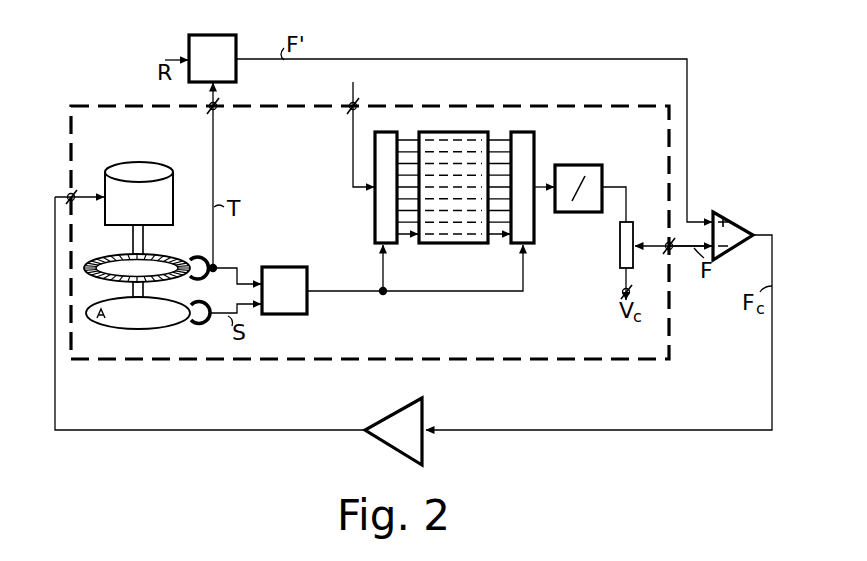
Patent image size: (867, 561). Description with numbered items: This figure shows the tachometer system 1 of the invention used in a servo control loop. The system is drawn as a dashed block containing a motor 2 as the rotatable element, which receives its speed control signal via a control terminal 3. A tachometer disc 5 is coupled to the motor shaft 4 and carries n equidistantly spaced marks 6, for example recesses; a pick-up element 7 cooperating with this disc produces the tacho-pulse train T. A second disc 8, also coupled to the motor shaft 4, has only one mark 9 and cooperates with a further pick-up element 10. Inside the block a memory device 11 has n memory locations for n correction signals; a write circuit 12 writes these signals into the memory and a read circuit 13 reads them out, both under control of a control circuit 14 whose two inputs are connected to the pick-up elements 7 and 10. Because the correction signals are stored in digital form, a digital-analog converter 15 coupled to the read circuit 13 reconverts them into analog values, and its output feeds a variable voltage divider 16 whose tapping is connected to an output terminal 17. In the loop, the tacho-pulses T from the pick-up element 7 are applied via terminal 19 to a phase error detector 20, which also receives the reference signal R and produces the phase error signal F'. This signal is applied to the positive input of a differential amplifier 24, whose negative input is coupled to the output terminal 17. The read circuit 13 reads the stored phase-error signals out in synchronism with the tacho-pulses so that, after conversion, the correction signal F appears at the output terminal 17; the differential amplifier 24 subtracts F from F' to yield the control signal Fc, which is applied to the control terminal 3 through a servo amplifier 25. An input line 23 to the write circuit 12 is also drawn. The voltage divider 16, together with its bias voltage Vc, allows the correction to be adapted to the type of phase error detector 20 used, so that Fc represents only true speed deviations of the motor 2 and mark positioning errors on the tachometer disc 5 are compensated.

The tachometer system 1 is at (488, 106).
The motor 2 is at (173, 180).
The control terminal 3 is at (73, 190).
The motor shaft 4 is at (145, 238).
The tachometer disc 5 is at (108, 281).
The marks 6 is at (99, 257).
The pick-up element 7 is at (196, 255).
The second disc 8 is at (150, 329).
The mark 9 is at (98, 323).
The pick-up element 10 is at (196, 325).
The memory device 11 is at (444, 243).
The write circuit 12 is at (388, 243).
The read circuit 13 is at (528, 243).
The control circuit 14 is at (284, 267).
The digital-analog converter 15 is at (578, 212).
The variable voltage divider 16 is at (619, 241).
The output terminal 17 is at (672, 249).
The terminal 19 is at (216, 110).
The phase error detector 20 is at (218, 35).
The memory input 23 is at (362, 72).
The differential amplifier 24 is at (742, 220).
The servo amplifier 25 is at (380, 440).